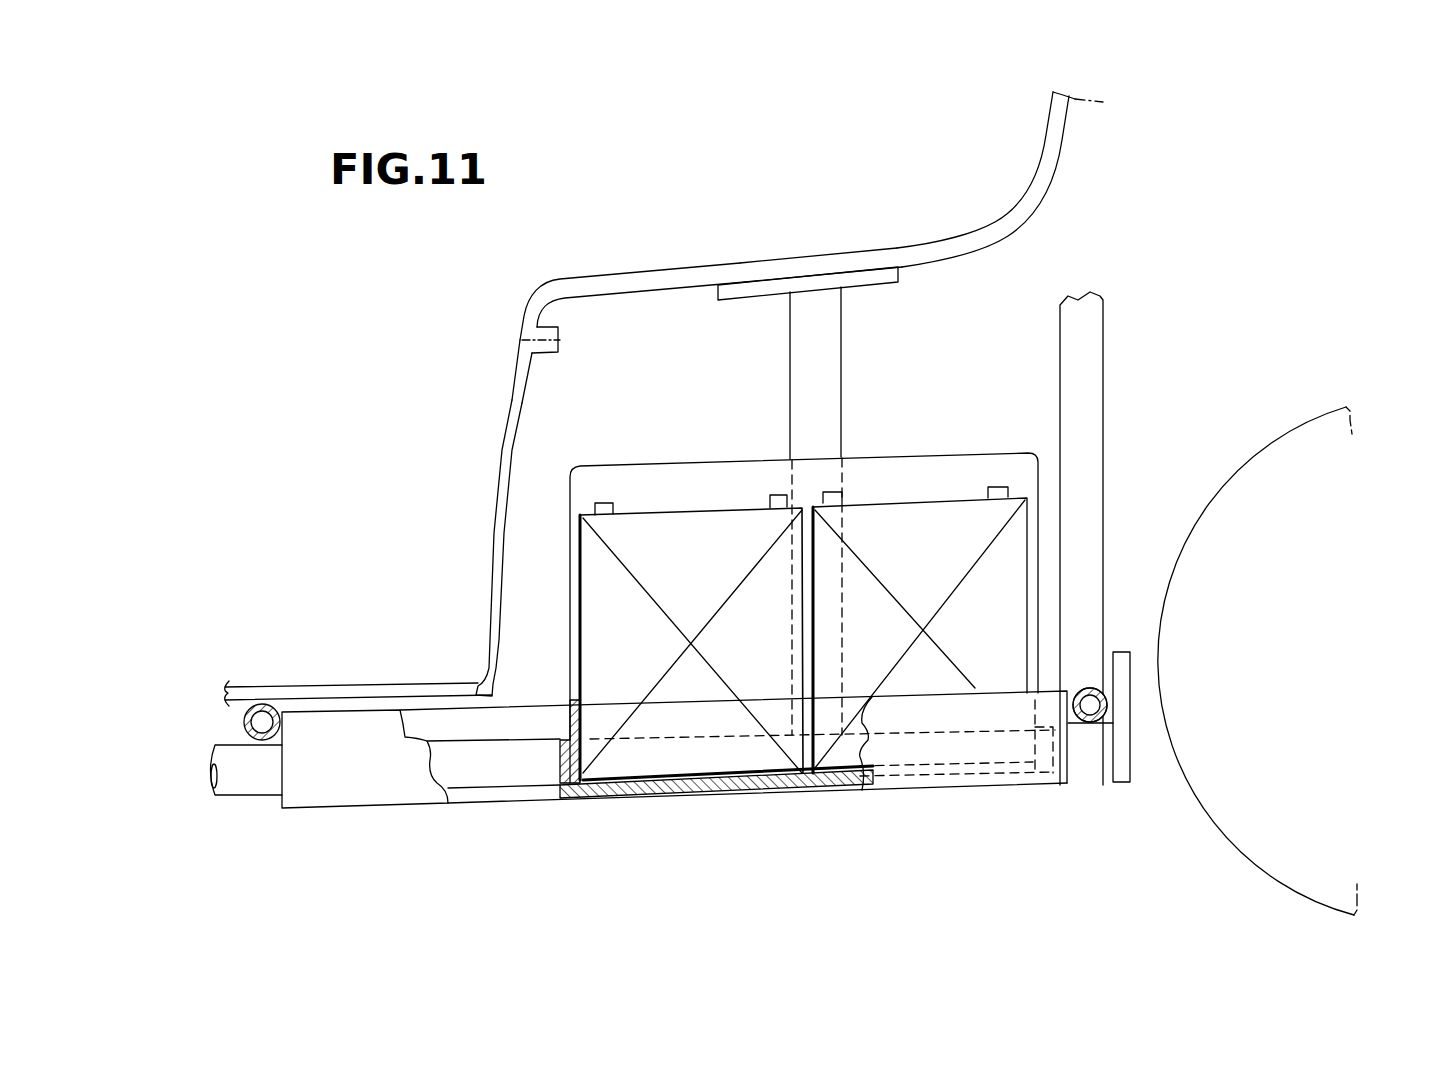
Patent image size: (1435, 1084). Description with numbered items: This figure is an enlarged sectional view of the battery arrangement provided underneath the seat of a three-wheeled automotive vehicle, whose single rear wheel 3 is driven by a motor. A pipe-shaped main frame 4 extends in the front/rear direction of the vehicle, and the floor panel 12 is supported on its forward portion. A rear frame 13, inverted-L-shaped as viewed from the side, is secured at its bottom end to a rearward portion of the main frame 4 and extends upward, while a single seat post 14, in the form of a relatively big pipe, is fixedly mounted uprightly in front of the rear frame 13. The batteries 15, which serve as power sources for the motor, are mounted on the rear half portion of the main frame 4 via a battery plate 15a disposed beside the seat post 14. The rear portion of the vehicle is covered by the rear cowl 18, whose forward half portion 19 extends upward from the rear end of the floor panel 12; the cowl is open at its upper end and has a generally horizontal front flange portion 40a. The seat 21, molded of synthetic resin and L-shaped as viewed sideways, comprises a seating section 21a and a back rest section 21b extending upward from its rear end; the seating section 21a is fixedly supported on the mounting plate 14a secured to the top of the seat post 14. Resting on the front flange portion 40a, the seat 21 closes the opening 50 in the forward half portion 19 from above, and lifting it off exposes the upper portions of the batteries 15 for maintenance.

The rear wheel 3 is at (1301, 425).
The main frame 4 is at (258, 783).
The floor panel 12 is at (287, 686).
The rear frame 13 is at (1093, 387).
The seat post 14 is at (841, 384).
The mounting plate 14a is at (757, 285).
The battery 15 is at (602, 576).
The battery plate 15a is at (640, 796).
The rear cowl 18 is at (503, 447).
The forward half portion 19 is at (517, 372).
The seat 21 is at (658, 265).
The seating section 21a is at (877, 245).
The back rest section 21b is at (1045, 127).
The front flange portion 40a is at (560, 350).
The opening 50 is at (562, 337).